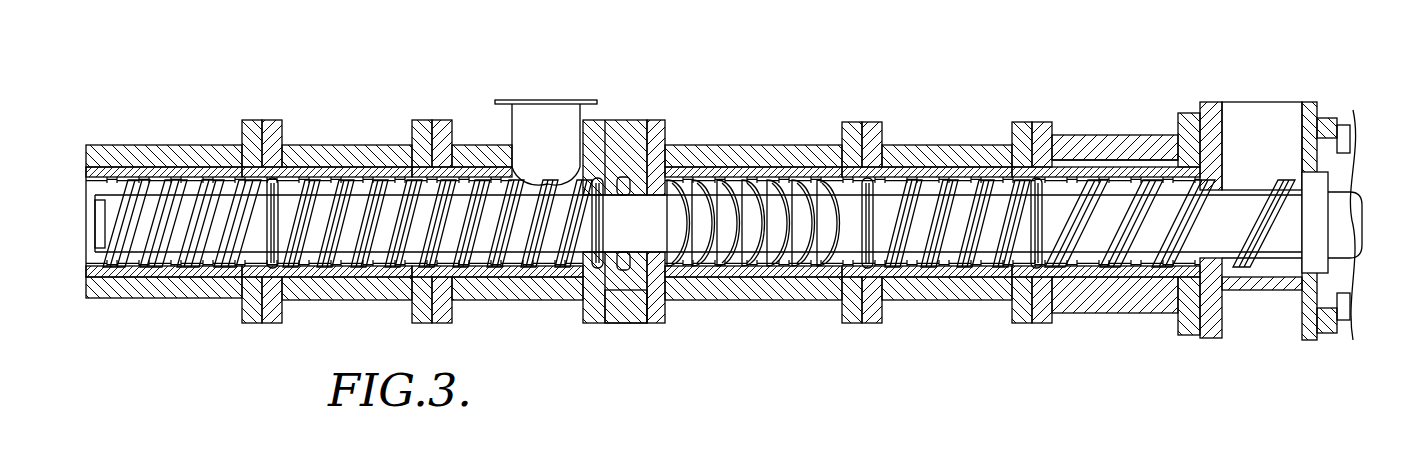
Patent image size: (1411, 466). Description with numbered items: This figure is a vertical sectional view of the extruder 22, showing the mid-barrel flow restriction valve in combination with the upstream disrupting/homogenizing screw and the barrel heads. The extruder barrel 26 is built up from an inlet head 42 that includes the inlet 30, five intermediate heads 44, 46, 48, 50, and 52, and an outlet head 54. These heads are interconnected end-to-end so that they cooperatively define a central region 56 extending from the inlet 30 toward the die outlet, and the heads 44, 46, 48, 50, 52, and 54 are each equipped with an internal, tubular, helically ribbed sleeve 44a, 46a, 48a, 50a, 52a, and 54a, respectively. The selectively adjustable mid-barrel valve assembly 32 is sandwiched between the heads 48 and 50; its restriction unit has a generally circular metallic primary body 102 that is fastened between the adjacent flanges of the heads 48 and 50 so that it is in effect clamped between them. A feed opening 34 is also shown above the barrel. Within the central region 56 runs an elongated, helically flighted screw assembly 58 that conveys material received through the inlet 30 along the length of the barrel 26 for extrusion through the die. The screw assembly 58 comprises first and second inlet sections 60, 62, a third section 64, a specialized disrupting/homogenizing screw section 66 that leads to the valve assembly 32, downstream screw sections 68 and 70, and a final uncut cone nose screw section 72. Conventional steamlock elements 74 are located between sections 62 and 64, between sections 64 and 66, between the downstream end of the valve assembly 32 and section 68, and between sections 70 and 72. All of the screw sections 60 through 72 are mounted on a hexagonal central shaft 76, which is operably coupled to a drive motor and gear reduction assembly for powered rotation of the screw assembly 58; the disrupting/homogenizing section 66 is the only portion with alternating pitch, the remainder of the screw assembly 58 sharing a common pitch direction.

The extruder 22 is at (1040, 72).
The extruder barrel 26 is at (925, 143).
The inlet 30 is at (1282, 102).
The mid-barrel valve assembly 32 is at (622, 118).
The hopper / feed port 34 is at (527, 110).
The inlet head 42 is at (1275, 283).
The intermediate head 44 is at (1075, 300).
The helically ribbed sleeve 44a is at (1106, 182).
The intermediate head 46 is at (950, 293).
The helically ribbed sleeve 46a is at (980, 172).
The intermediate head 48 is at (716, 290).
The helically ribbed sleeve 48a is at (805, 170).
The intermediate head 50 is at (500, 287).
The helically ribbed sleeve 50a is at (487, 165).
The intermediate head 52 is at (372, 295).
The helically ribbed sleeve 52a is at (385, 165).
The outlet head 54 is at (213, 293).
The helically ribbed sleeve 54a is at (187, 165).
The central region 56 is at (884, 185).
The screw assembly 58 is at (733, 176).
The first inlet section 60 is at (1233, 200).
The second inlet section 62 is at (1137, 240).
The third section 64 is at (1000, 240).
The disrupting/homogenizing screw section 66 is at (787, 268).
The downstream screw section 68 is at (557, 238).
The downstream screw section 70 is at (300, 270).
The uncut cone nose screw section 72 is at (142, 234).
The steamlock element 74 is at (276, 185).
The hexagonal central shaft 76 is at (1345, 237).
The primary body 102 is at (622, 305).